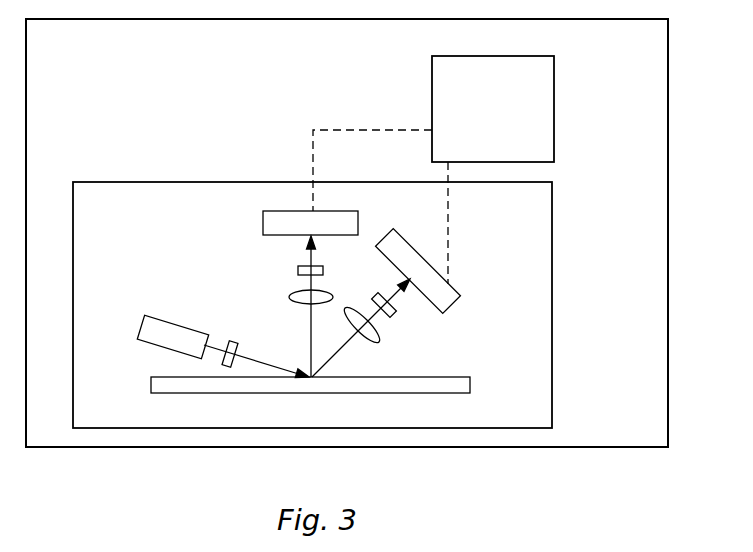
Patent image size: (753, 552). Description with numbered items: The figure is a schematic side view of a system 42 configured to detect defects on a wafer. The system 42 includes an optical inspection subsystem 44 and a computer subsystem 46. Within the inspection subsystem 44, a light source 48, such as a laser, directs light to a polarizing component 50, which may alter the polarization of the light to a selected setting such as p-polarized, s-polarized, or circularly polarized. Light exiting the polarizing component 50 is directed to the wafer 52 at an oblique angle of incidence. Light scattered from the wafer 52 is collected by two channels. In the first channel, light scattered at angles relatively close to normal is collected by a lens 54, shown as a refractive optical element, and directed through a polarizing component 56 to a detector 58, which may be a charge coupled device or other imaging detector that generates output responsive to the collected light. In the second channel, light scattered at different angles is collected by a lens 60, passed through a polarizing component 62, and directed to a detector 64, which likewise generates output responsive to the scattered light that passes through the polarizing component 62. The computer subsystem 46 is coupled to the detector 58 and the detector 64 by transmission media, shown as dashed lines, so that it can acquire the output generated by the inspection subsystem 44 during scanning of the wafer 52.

The system 42 is at (376, 233).
The optical inspection subsystem 44 is at (341, 305).
The computer subsystem 46 is at (482, 144).
The light source 48 is at (163, 328).
The polarizing component 50 is at (213, 337).
The wafer 52 is at (291, 373).
The lens 54 is at (287, 286).
The polarizing component 56 is at (285, 260).
The detector 58 is at (283, 219).
The lens 60 is at (383, 335).
The polarizing component 62 is at (406, 317).
The detector 64 is at (437, 278).